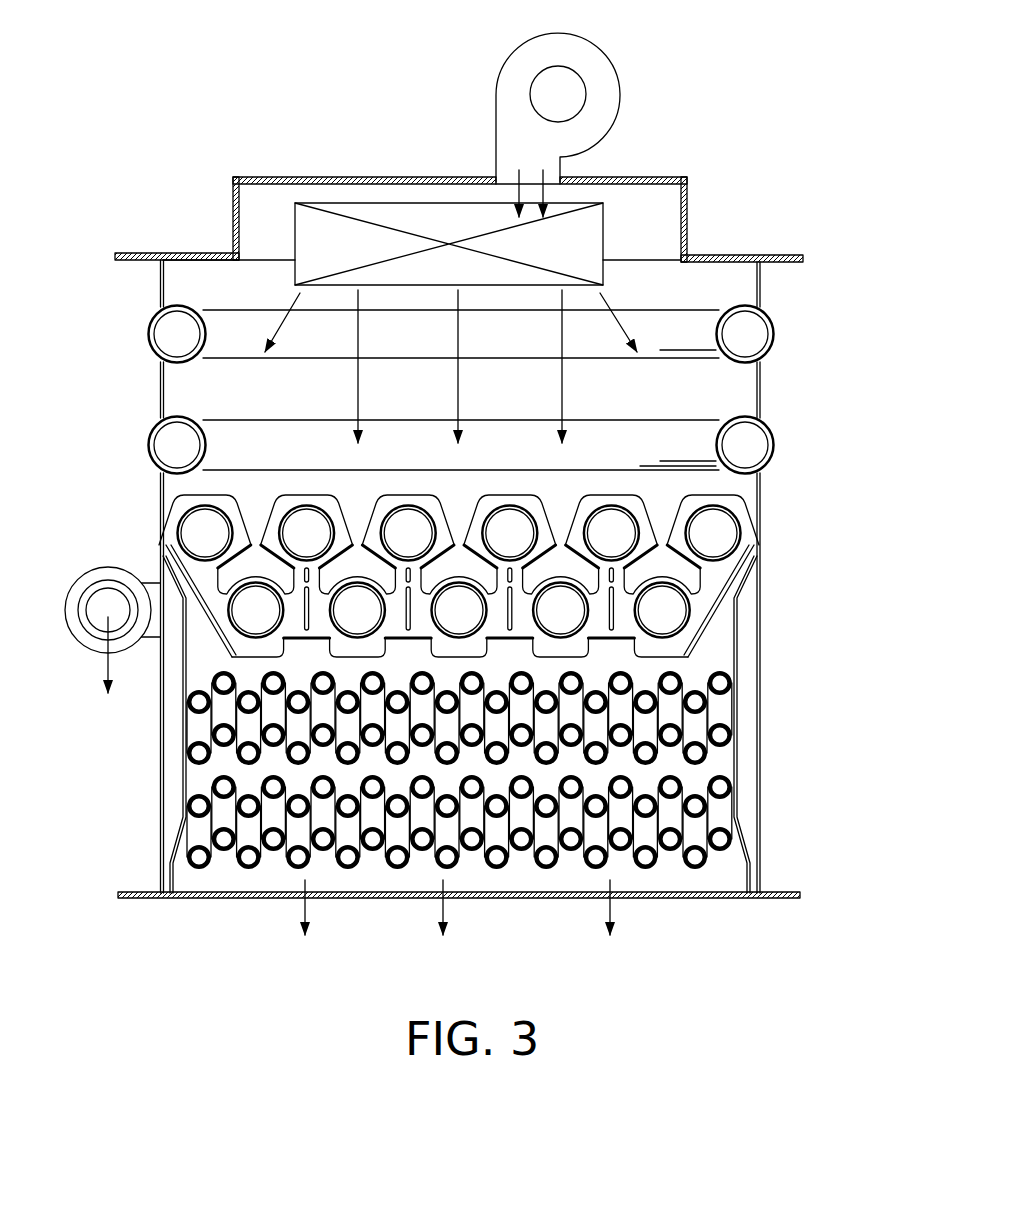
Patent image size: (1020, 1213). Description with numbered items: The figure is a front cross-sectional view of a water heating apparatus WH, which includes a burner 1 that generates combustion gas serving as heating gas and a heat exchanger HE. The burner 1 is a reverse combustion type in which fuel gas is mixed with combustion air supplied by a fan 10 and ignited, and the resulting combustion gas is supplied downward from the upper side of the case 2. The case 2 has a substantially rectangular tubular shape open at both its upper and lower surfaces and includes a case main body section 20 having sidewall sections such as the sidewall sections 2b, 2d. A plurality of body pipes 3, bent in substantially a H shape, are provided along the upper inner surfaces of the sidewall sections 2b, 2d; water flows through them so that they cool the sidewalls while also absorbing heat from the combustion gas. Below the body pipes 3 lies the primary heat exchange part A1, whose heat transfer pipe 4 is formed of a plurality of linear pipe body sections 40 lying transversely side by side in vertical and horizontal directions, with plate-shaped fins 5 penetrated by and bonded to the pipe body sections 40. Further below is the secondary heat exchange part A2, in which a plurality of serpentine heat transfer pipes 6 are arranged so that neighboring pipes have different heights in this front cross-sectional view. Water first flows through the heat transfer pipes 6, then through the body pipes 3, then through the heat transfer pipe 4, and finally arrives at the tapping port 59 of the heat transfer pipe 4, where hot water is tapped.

The water heating apparatus WH is at (143, 166).
The fan 10 is at (605, 100).
The burner 1 is at (595, 232).
The case 2 is at (155, 391).
The case main body section 20 is at (158, 400).
The sidewall section 2b is at (760, 393).
The sidewall section 2d is at (158, 488).
The heat exchanger HE is at (156, 297).
The body pipes 3 is at (203, 340).
The primary heat exchange part A1 is at (388, 488).
The secondary heat exchange part A2 is at (745, 671).
The fins 5 is at (383, 504).
The heat transfer pipe 4 is at (534, 515).
The pipe body sections 40 is at (303, 507).
The tapping port 59 is at (107, 595).
The heat transfer pipes 6 is at (373, 856).